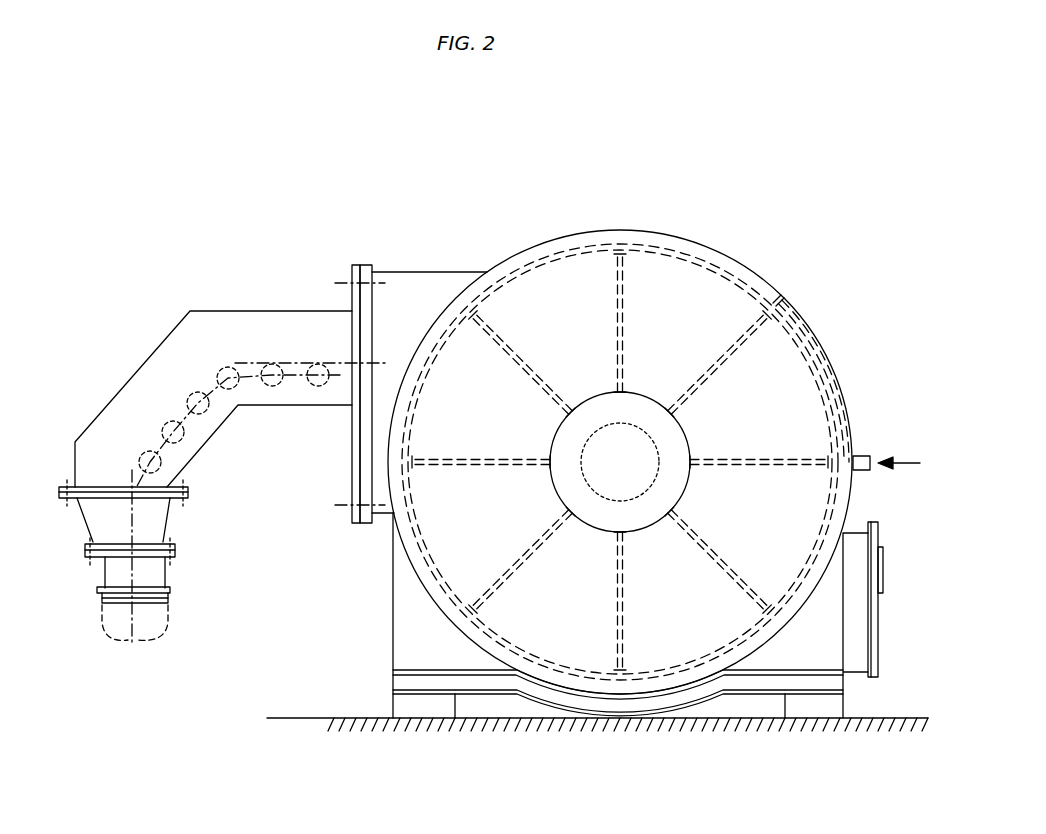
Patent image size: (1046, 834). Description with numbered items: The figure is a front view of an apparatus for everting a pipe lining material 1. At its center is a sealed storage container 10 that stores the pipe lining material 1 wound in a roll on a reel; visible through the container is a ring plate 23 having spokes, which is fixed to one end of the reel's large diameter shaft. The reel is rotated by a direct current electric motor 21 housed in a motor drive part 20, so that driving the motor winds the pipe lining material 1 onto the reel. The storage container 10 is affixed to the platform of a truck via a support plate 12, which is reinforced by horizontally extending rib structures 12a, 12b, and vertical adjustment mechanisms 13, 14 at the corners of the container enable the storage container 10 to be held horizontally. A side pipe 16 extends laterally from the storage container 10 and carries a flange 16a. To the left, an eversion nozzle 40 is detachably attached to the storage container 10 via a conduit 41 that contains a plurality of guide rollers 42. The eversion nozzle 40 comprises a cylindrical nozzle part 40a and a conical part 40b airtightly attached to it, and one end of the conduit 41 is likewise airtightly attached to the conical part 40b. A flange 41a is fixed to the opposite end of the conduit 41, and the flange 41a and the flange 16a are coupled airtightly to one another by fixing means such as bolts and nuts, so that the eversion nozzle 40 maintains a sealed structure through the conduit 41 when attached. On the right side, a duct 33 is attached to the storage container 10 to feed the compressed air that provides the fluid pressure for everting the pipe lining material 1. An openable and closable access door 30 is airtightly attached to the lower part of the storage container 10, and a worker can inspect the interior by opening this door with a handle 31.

The pipe lining material 1 is at (198, 392).
The storage container 10 is at (660, 232).
The support plate 12 is at (408, 643).
The rib structure 12a is at (478, 676).
The rib structure 12b is at (732, 696).
The vertical adjustment mechanism 13 is at (422, 707).
The vertical adjustment mechanism 14 is at (806, 710).
The side pipe 16 is at (412, 272).
The flange 16a is at (366, 265).
The motor drive part 20 is at (695, 436).
The direct current electric motor 21 is at (632, 425).
The ring plate 23 is at (548, 252).
The access door 30 is at (878, 650).
The handle 31 is at (883, 570).
The duct 33 is at (862, 457).
The eversion nozzle 40 is at (165, 572).
The cylindrical nozzle part 40a is at (108, 584).
The conical part 40b is at (165, 520).
The conduit 41 is at (128, 380).
The flange 41a is at (342, 298).
The guide rollers 42 is at (203, 410).